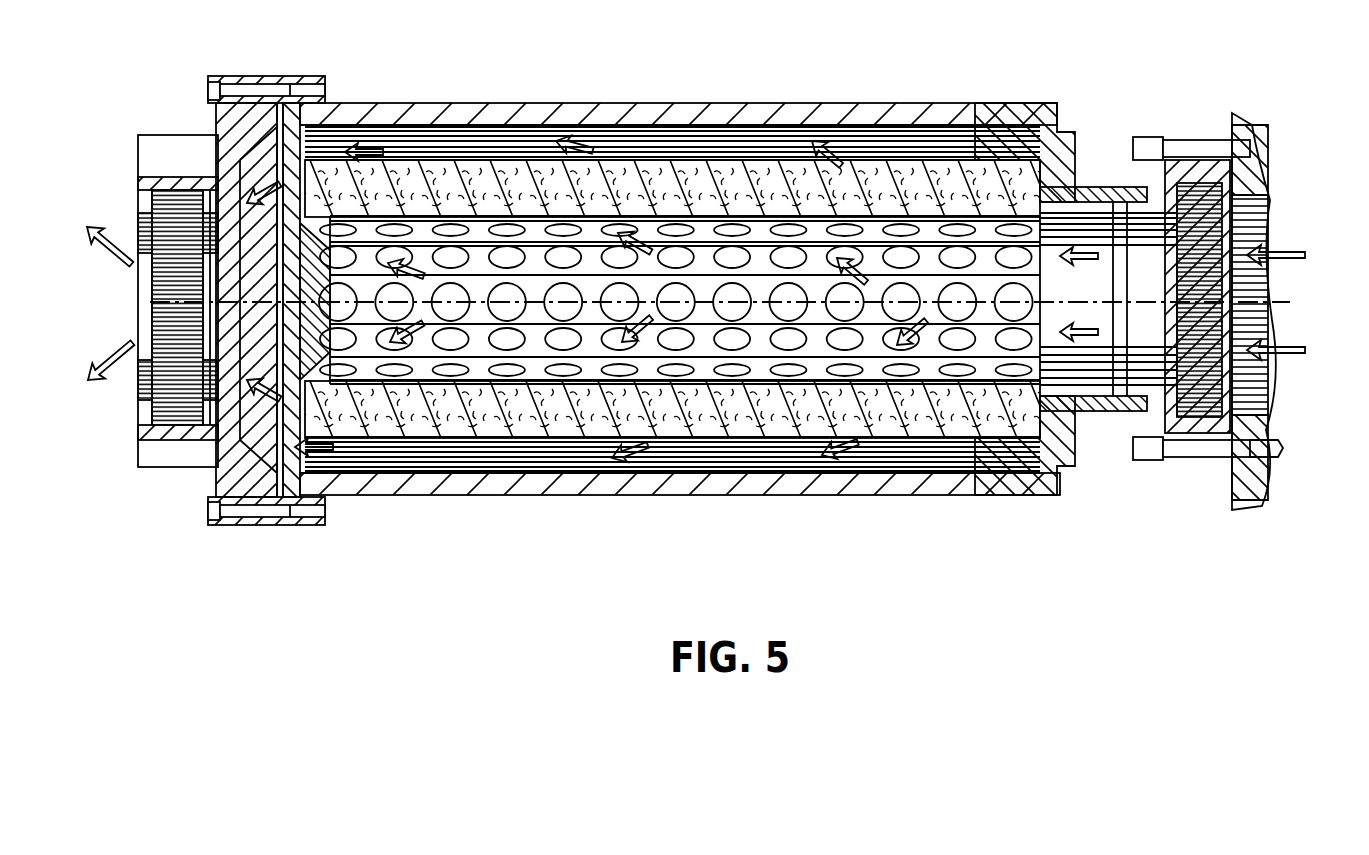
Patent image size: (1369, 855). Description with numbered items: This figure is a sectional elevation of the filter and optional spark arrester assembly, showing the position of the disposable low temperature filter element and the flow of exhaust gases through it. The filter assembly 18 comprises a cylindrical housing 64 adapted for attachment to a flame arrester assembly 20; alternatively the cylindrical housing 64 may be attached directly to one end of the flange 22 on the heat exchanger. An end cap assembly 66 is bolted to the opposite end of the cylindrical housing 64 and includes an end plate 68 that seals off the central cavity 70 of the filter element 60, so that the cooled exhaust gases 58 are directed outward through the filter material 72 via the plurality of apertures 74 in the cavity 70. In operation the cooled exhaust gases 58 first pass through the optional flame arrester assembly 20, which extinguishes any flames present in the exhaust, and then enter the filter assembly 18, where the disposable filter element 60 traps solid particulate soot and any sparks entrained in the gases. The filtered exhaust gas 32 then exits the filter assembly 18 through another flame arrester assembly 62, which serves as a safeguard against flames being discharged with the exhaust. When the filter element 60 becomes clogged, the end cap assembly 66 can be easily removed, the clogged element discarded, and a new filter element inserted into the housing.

The filter assembly 18 is at (684, 102).
The flame arrester assembly 20 is at (1206, 456).
The flange 22 is at (1250, 130).
The filtered exhaust gas 32 is at (588, 142).
The cooled exhaust gases 58 is at (1300, 345).
The filter element 60 is at (1047, 252).
The flame arrester assembly 62 is at (176, 438).
The cylindrical housing 64 is at (572, 495).
The end cap assembly 66 is at (262, 526).
The end plate 68 is at (238, 498).
The central cavity 70 is at (990, 492).
The filter material 72 is at (398, 166).
The apertures 74 is at (692, 252).